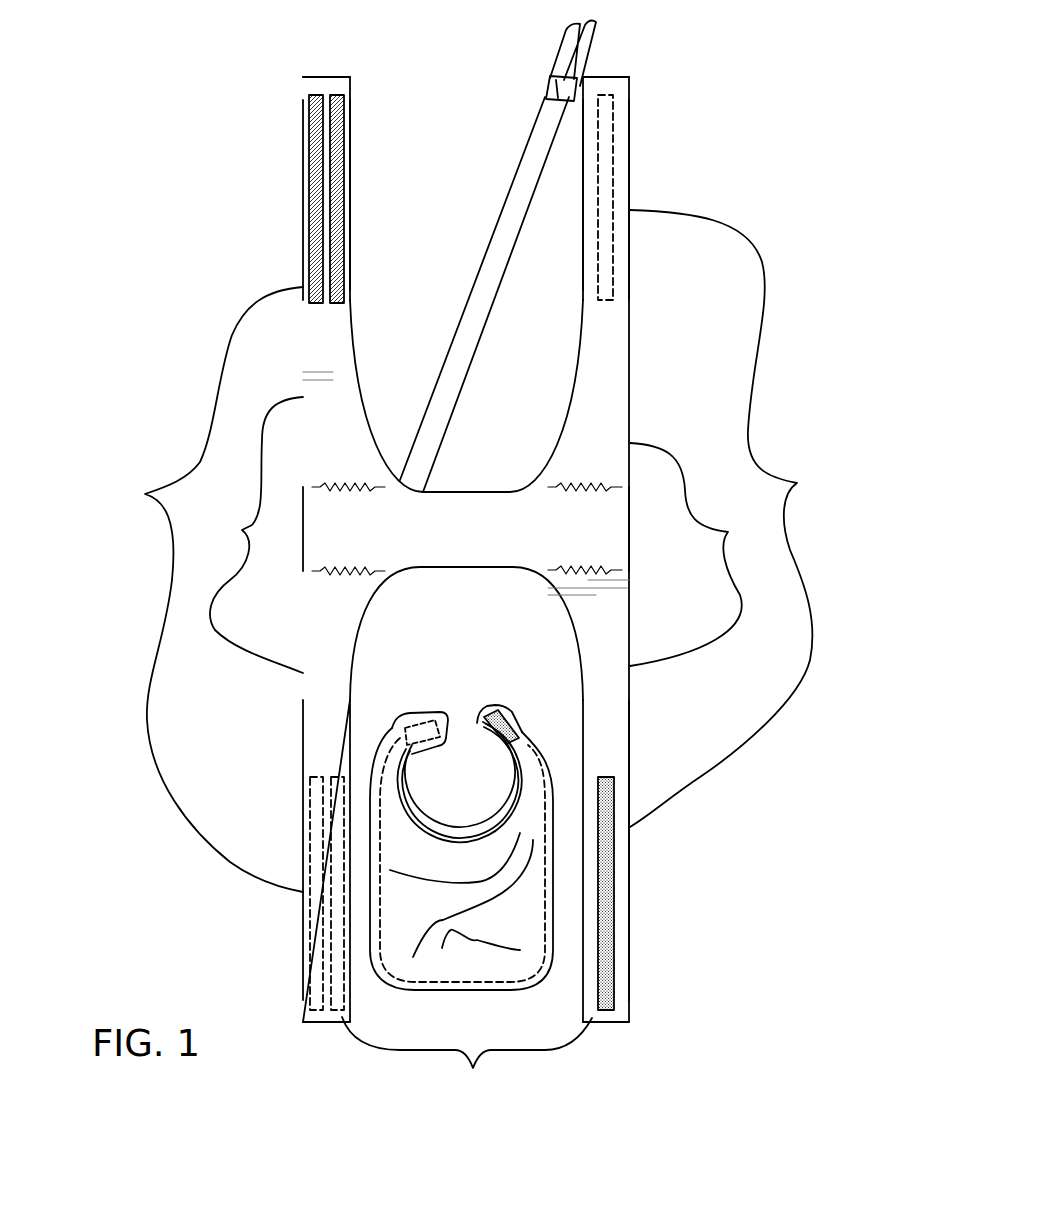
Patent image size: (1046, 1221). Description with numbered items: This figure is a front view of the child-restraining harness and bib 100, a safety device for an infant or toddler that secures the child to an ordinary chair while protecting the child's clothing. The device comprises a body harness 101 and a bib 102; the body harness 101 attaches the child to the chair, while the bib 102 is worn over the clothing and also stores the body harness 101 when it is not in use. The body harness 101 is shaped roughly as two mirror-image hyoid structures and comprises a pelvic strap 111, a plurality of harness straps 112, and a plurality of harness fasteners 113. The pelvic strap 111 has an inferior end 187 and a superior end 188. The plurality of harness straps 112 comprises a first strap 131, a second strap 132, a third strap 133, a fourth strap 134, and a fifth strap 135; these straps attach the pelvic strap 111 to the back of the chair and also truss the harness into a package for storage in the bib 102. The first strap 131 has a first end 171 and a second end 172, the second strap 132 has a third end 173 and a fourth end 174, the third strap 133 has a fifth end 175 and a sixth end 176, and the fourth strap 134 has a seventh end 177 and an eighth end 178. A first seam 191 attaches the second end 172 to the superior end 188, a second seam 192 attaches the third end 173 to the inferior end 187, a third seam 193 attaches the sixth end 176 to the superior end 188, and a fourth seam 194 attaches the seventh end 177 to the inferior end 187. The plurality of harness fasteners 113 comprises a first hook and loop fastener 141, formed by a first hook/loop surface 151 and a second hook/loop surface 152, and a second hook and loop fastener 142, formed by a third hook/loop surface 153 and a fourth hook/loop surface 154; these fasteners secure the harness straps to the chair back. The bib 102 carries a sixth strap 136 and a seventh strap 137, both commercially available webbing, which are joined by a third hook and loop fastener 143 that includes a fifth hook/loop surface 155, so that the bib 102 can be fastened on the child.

The child-restraining harness and bib 100 is at (167, 121).
The body harness 101 is at (630, 353).
The bib 102 is at (473, 703).
The pelvic strap 111 is at (476, 494).
The plurality of harness straps 112 is at (478, 535).
The plurality of harness fasteners 113 is at (467, 1060).
The first strap 131 is at (340, 317).
The second strap 132 is at (308, 737).
The third strap 133 is at (603, 352).
The fourth strap 134 is at (573, 672).
The fifth strap 135 is at (538, 136).
The sixth strap 136 is at (408, 762).
The seventh strap 137 is at (512, 760).
The first hook and loop fastener 141 is at (423, 352).
The second hook and loop fastener 142 is at (742, 518).
The third hook and loop fastener 143 is at (478, 716).
The first hook/loop surface 151 is at (338, 192).
The second hook/loop surface 152 is at (340, 978).
The third hook/loop surface 153 is at (608, 150).
The fourth hook/loop surface 154 is at (610, 891).
The fifth hook/loop surface 155 is at (417, 716).
The first end 171 is at (327, 77).
The second end 172 is at (340, 487).
The third end 173 is at (337, 571).
The fourth end 174 is at (330, 1022).
The fifth end 175 is at (613, 77).
The sixth end 176 is at (593, 487).
The seventh end 177 is at (590, 570).
The eighth end 178 is at (615, 1022).
The inferior end 187 is at (495, 568).
The superior end 188 is at (453, 493).
The first seam 191 is at (340, 487).
The second seam 192 is at (337, 571).
The third seam 193 is at (593, 487).
The fourth seam 194 is at (590, 570).